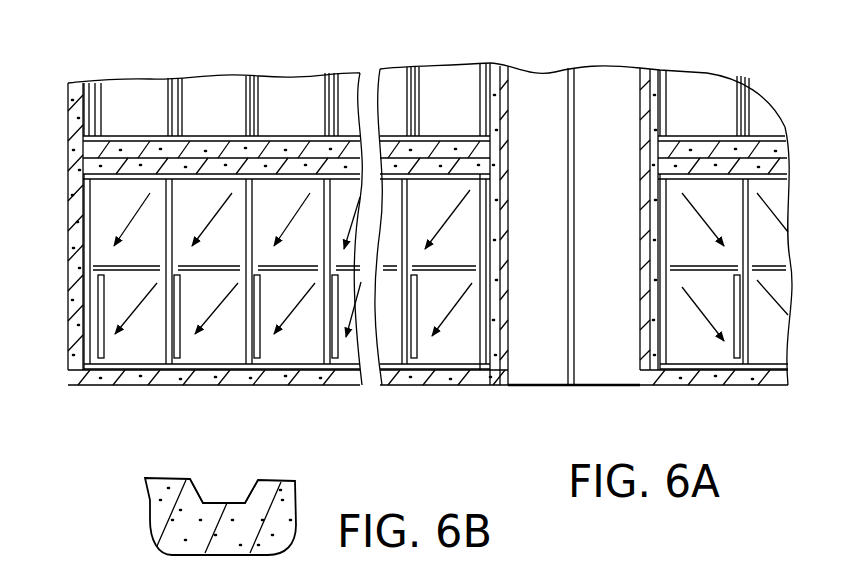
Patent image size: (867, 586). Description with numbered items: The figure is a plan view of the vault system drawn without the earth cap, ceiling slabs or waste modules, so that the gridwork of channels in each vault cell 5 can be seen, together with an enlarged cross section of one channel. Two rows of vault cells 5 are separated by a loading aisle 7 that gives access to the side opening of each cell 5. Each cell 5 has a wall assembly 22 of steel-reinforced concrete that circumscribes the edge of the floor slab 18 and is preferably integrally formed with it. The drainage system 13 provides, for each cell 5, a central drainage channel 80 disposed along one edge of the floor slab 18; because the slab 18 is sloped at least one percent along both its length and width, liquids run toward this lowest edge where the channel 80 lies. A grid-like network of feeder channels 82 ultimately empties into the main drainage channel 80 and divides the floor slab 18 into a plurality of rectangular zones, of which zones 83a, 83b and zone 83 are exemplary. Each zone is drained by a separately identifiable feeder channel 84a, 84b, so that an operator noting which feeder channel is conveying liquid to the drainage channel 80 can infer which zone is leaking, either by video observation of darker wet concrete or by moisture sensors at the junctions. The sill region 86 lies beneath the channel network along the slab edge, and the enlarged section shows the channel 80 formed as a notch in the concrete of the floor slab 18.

In FIG. 6A, the vault cell 5 is at (62, 150).
In FIG. 6A, the loading aisle 7 is at (642, 392).
In FIG. 6A, the drainage system 13 is at (480, 186).
In FIG. 6B, the floor slab 18 is at (160, 509).
In FIG. 6A, the wall assembly 22 is at (62, 97).
In FIG. 6A, the central drainage channel 80 is at (233, 359).
In FIG. 6B, the central drainage channel 80 is at (224, 498).
In FIG. 6A, the feeder channels 82 is at (173, 187).
In FIG. 6A, the rectangular zone 83 is at (722, 218).
In FIG. 6A, the rectangular zone 83a is at (204, 212).
In FIG. 6A, the rectangular zone 83b is at (204, 308).
In FIG. 6A, the feeder channel 84a is at (167, 337).
In FIG. 6A, the feeder channel 84b is at (175, 345).
In FIG. 6A, the base sill 86 is at (66, 360).